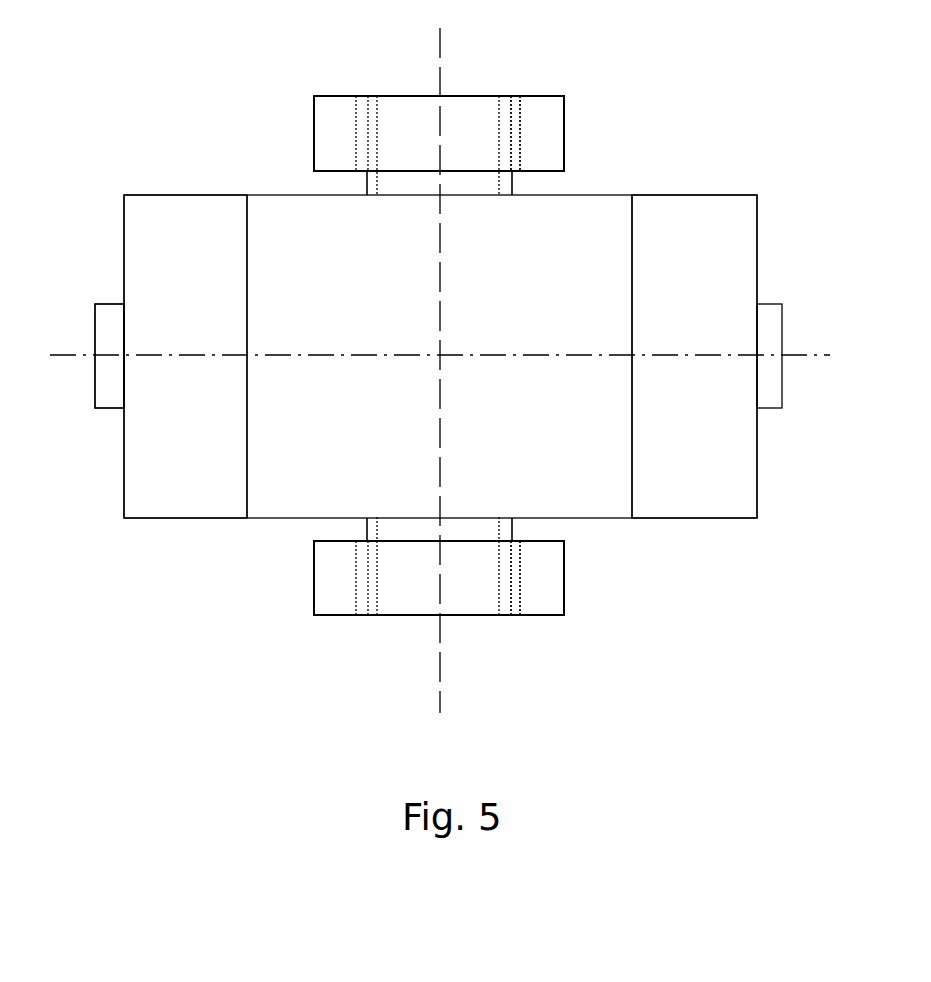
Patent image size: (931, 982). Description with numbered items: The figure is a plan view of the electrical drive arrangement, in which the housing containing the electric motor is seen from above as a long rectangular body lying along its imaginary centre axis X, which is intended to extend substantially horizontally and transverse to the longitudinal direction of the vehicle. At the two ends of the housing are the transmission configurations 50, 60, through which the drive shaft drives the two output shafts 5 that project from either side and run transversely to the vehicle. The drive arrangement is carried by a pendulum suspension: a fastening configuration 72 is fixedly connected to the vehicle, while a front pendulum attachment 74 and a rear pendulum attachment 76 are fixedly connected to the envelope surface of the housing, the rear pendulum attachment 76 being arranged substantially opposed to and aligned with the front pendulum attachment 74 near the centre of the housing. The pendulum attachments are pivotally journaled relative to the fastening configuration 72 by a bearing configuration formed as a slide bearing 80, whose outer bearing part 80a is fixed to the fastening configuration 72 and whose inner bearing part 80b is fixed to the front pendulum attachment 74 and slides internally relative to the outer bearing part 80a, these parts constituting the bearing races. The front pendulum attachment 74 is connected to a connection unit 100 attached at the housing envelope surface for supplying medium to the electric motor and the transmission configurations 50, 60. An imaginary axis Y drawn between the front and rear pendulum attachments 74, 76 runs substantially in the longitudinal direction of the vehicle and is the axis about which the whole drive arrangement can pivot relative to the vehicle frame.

The output shaft 5 is at (111, 408).
The transmission configuration 50 is at (186, 518).
The transmission configuration 60 is at (692, 518).
The fastening configuration 72 is at (324, 96).
The front pendulum attachment 74 is at (512, 532).
The rear pendulum attachment 76 is at (512, 181).
The slide bearing 80 is at (110, 304).
The outer bearing part 80a is at (518, 105).
The inner bearing part 80b is at (508, 103).
The connection unit 100 is at (406, 616).
The centre axis X is at (794, 355).
The axis Y is at (440, 697).